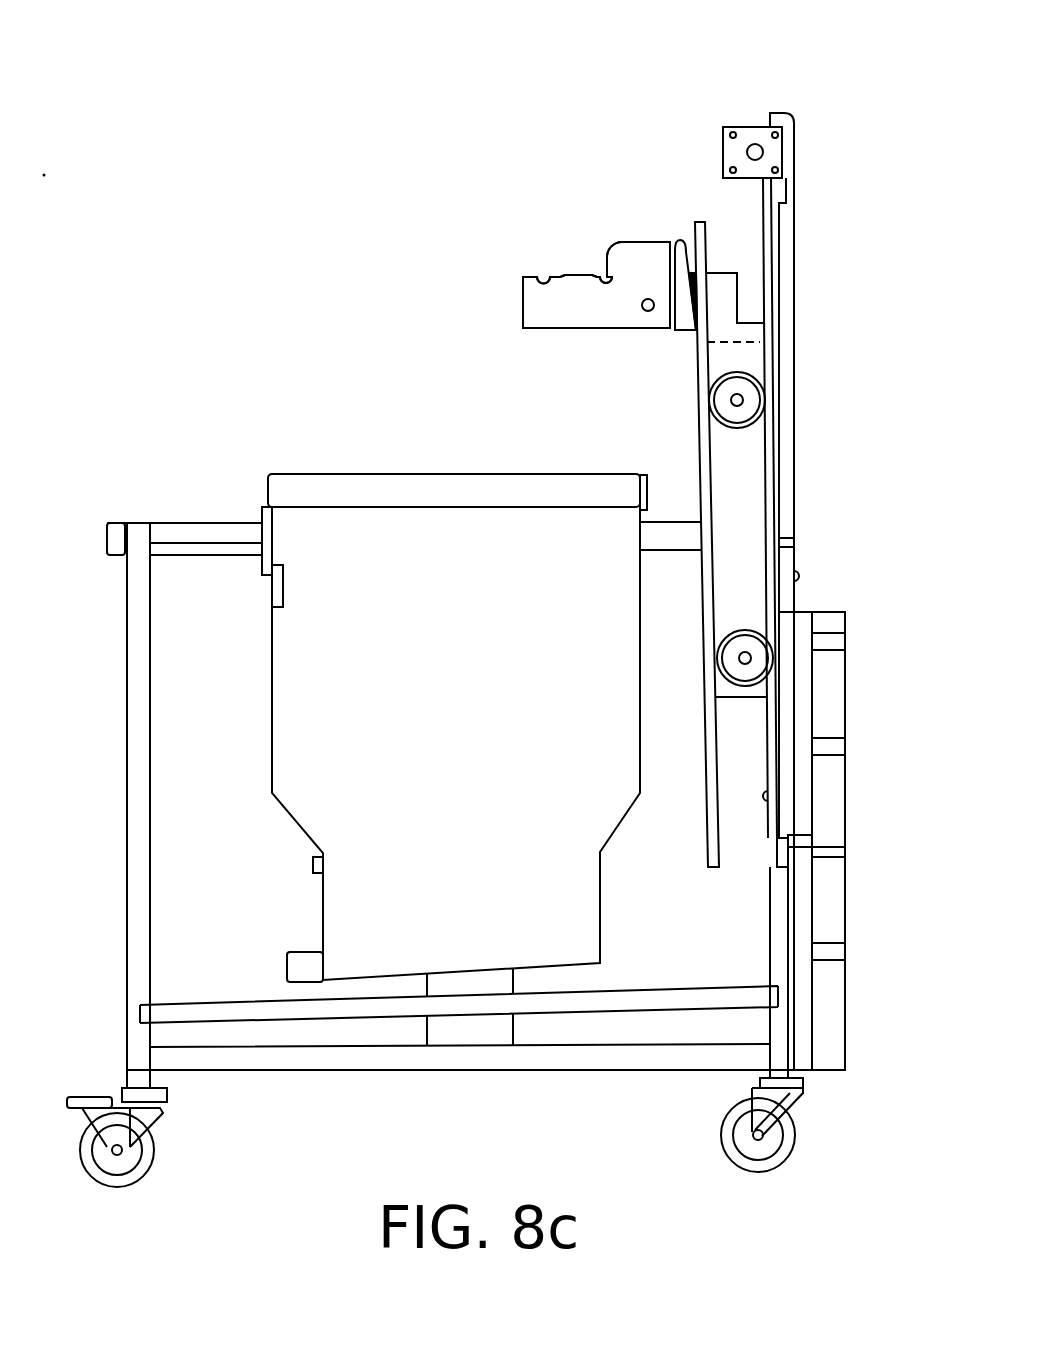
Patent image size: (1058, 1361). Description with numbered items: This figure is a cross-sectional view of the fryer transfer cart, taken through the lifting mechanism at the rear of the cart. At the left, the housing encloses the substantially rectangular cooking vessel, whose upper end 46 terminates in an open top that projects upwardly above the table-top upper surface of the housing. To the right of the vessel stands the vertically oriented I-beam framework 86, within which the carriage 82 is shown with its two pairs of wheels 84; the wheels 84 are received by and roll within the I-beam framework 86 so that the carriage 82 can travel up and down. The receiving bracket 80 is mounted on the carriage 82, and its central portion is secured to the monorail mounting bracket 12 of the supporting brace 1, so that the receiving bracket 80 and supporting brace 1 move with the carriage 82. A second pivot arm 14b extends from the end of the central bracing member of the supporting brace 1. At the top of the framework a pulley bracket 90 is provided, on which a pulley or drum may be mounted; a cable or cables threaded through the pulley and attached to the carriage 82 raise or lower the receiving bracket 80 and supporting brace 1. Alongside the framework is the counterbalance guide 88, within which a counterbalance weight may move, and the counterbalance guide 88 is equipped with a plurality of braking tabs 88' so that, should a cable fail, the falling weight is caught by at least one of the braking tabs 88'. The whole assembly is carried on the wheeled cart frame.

The supporting brace 1 is at (605, 236).
The monorail mounting bracket 12 is at (673, 330).
The second pivot arm 14b is at (523, 305).
The upper end 46 is at (320, 474).
The receiving bracket 80 is at (676, 240).
The carriage 82 is at (740, 505).
The wheels 84 is at (755, 402).
The I-beam framework 86 is at (708, 823).
The counterbalance guide 88 is at (863, 841).
The braking tabs 88' is at (876, 668).
The pulley bracket 90 is at (746, 123).